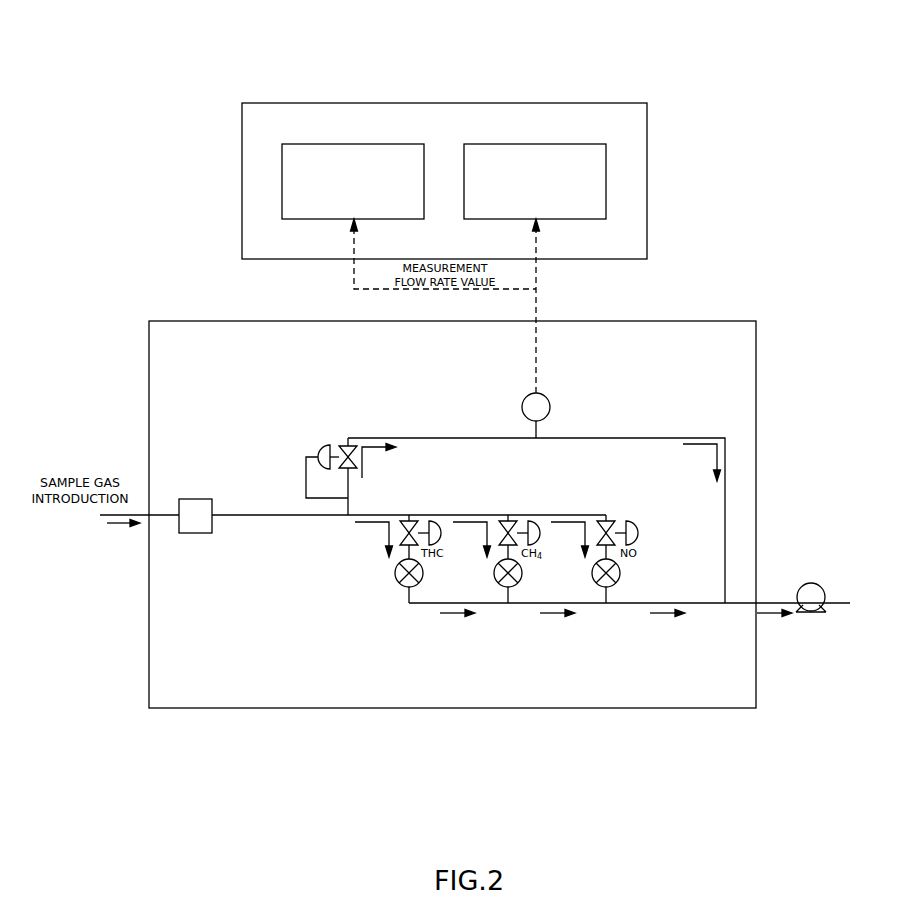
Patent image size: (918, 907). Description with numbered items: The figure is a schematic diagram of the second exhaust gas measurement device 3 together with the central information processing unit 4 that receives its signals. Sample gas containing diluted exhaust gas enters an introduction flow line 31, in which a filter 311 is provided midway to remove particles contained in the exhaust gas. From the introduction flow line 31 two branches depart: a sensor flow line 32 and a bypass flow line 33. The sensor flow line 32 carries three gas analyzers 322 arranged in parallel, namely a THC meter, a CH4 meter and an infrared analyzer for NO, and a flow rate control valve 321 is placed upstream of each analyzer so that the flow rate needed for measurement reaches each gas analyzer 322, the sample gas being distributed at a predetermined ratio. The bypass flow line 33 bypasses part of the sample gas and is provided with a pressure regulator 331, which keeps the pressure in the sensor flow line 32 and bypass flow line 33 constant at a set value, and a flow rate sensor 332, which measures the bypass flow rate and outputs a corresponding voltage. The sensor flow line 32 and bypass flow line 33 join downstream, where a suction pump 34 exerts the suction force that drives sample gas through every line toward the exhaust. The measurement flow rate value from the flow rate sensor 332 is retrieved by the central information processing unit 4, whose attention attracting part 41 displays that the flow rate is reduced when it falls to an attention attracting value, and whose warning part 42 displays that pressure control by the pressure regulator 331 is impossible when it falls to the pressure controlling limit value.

The exhaust gas measurement device 3 is at (152, 308).
The central information processing unit 4 is at (535, 103).
The attention attracting part 41 is at (606, 178).
The warning part 42 is at (282, 180).
The introduction flow line 31 is at (250, 518).
The filter 311 is at (196, 533).
The sensor flow line 32 is at (523, 605).
The flow rate control valve 321 is at (410, 518).
The gas analyzer 322 is at (400, 589).
The bypass flow line 33 is at (463, 436).
The pressure regulator 331 is at (322, 446).
The flow rate sensor 332 is at (548, 398).
The suction pump 34 is at (811, 613).